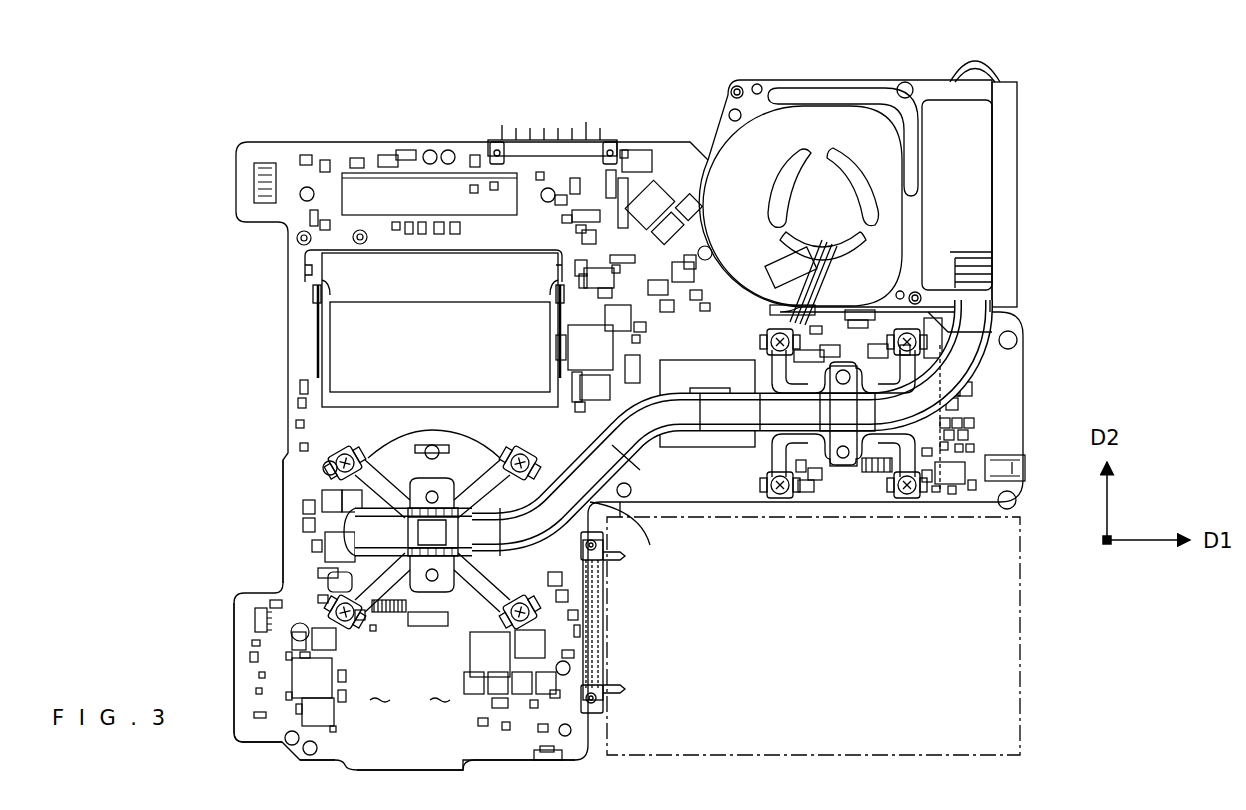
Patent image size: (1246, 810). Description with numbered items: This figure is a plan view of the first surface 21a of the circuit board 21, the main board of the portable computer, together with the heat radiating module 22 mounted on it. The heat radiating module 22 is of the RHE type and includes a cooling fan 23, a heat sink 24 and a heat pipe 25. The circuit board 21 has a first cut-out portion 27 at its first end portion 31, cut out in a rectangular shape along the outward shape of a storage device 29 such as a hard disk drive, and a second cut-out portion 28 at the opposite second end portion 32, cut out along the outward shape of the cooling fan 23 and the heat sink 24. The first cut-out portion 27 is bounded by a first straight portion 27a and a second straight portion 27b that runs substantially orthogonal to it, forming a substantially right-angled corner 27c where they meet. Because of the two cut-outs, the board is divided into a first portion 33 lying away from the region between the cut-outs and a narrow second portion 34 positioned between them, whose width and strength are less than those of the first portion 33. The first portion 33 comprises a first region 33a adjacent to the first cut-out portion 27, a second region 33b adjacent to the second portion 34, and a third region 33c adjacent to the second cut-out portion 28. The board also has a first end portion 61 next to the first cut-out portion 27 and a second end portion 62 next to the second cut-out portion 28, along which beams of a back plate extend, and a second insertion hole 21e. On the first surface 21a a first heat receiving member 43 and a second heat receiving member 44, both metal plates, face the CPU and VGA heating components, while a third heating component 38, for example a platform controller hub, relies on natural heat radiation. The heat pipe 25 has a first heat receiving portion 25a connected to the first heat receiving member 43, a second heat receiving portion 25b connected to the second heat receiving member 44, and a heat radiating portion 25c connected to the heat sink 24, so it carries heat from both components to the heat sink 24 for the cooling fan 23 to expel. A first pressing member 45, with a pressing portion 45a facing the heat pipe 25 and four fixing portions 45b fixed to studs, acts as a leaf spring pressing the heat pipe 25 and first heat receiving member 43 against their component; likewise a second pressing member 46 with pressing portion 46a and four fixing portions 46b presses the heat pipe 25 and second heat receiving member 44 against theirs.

The circuit board 21 is at (368, 745).
The first surface 21a is at (410, 702).
The second insertion hole 21e is at (632, 484).
The heat radiating module 22 is at (760, 78).
The cooling fan 23 is at (848, 128).
The heat sink 24 is at (975, 270).
The heat pipe 25 is at (576, 452).
The first heat receiving portion 25a is at (390, 525).
The second heat receiving portion 25b is at (800, 432).
The heat radiating portion 25c is at (968, 326).
The first cut-out portion 27 is at (702, 512).
The first straight portion 27a is at (805, 502).
The second straight portion 27b is at (603, 720).
The corner 27c is at (626, 550).
The second cut-out portion 28 is at (724, 258).
The storage device 29 is at (1022, 684).
The first end portion 31 is at (428, 755).
The second end portion 32 is at (437, 150).
The first portion 33 is at (300, 408).
The first region 33a is at (350, 724).
The second region 33b is at (300, 460).
The third region 33c is at (530, 165).
The second portion 34 is at (1004, 394).
The third heating component 38 is at (700, 432).
The first heat receiving member 43 is at (407, 590).
The second heat receiving member 44 is at (870, 450).
The first pressing member 45 is at (473, 475).
The pressing portion 45a is at (437, 545).
The fixing portions 45b is at (395, 525).
The second pressing member 46 is at (843, 360).
The pressing portion 46a is at (845, 435).
The fixing portions 46b is at (893, 380).
The first end portion 61 is at (722, 505).
The second end portion 62 is at (820, 310).